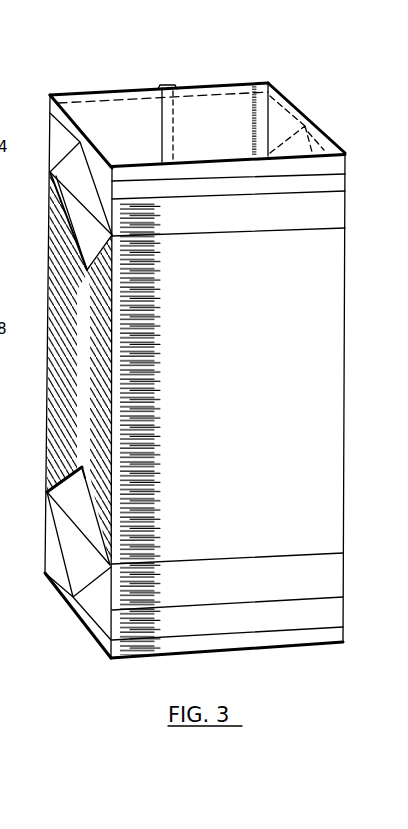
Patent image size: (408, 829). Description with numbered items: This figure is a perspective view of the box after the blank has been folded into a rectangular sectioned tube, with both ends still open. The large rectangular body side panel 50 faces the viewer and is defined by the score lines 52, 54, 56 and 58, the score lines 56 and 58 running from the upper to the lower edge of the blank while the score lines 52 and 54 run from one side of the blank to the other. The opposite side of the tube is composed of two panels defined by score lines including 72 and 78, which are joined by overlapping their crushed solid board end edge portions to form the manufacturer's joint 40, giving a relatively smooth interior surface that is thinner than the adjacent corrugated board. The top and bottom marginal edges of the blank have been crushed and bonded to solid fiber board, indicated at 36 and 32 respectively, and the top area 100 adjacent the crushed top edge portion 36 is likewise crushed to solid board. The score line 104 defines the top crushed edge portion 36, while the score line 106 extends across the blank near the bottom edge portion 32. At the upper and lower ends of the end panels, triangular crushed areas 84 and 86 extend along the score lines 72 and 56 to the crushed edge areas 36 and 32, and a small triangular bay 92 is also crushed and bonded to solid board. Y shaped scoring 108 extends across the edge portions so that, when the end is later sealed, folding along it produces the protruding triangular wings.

The crushed and bonded bottom edge portion 32 is at (153, 647).
The crushed and bonded top edge portion 36 is at (125, 95).
The manufacturer's joint 40 is at (163, 85).
The body side panel 50 is at (236, 381).
The score line 52 is at (285, 231).
The score line 54 is at (267, 557).
The score line 56 is at (112, 385).
The score line 58 is at (346, 302).
The score line 72 is at (45, 398).
The score line 78 is at (274, 102).
The triangular crushed area 84 is at (83, 228).
The triangular crushed area 86 is at (78, 513).
The triangular bay 92 is at (86, 480).
The top area 100 is at (332, 180).
The score line 104 is at (97, 103).
The score line 106 is at (243, 635).
The Y shaped scoring 108 is at (318, 140).